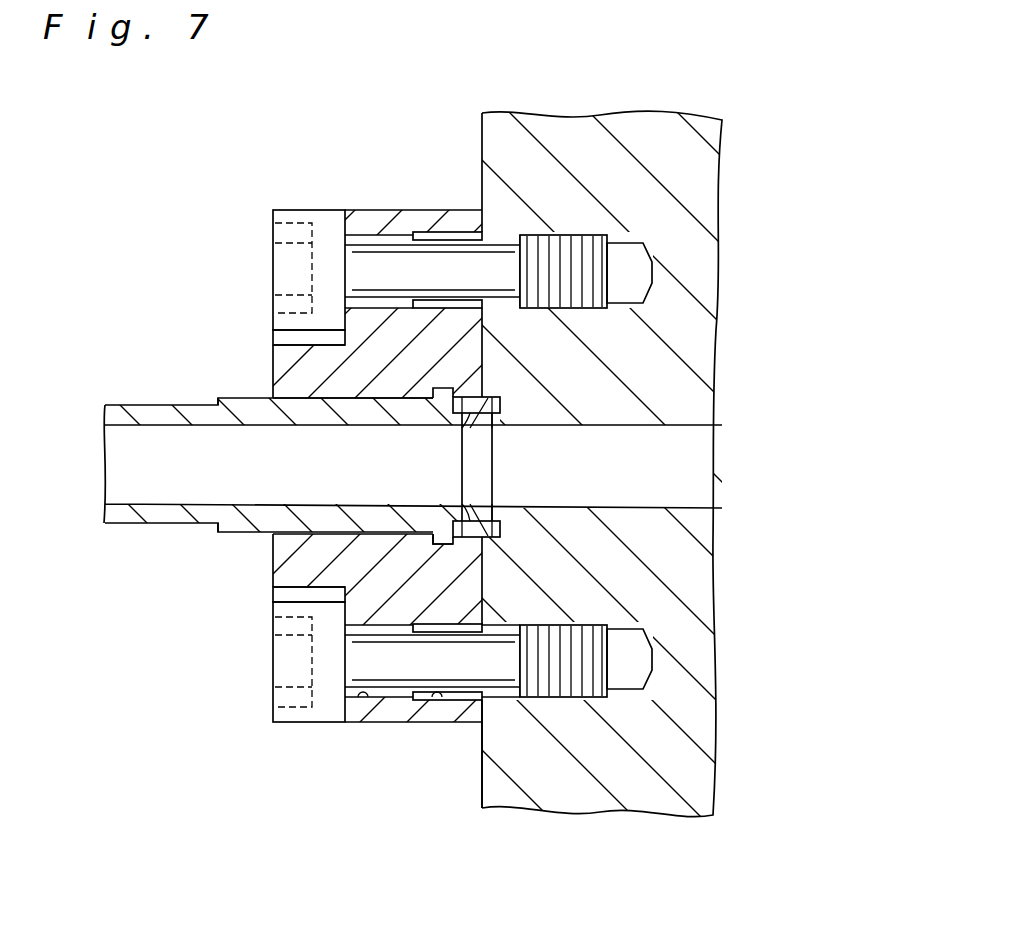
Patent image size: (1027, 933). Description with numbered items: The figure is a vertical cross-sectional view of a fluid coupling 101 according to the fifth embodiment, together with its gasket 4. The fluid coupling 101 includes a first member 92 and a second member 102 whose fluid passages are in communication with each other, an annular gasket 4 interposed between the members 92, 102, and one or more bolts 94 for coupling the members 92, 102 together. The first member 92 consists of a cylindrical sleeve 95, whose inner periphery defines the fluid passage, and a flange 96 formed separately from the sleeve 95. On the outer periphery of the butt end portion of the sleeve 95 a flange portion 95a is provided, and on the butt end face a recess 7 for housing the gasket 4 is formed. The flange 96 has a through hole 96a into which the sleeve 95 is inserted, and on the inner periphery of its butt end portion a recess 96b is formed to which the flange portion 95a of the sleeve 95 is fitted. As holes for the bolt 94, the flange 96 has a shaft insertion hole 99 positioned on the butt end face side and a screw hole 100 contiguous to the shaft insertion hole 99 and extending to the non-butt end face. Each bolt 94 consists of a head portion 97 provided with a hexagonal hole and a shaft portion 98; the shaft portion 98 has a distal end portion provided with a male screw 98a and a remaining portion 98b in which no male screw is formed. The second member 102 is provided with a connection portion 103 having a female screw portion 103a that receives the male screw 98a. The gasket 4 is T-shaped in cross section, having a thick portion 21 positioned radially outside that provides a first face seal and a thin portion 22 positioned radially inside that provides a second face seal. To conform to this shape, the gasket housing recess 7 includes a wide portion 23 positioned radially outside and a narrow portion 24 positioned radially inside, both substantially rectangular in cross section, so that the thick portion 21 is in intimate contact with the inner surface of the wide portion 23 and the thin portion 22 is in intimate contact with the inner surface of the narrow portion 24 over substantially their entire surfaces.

The gasket 4 is at (570, 433).
The gasket housing recess 7 is at (462, 438).
The thick portion 21 is at (468, 530).
The thin portion 22 is at (478, 517).
The wide portion 23 is at (495, 530).
The narrow portion 24 is at (493, 497).
The first member 92 is at (148, 403).
The bolt 94 is at (292, 209).
The sleeve 95 is at (233, 524).
The flange portion 95a is at (428, 547).
The flange 96 is at (285, 577).
The through hole 96a is at (275, 410).
The recess 96b is at (432, 388).
The head portion 97 is at (330, 228).
The shaft portion 98 is at (453, 263).
The male screw 98a is at (552, 300).
The remaining portion 98b is at (398, 260).
The shaft insertion hole 99 is at (448, 698).
The screw hole 100 is at (357, 697).
The fluid coupling 101 is at (752, 143).
The second member 102 is at (702, 268).
The connection portion 103 is at (472, 797).
The female screw portion 103a is at (594, 700).